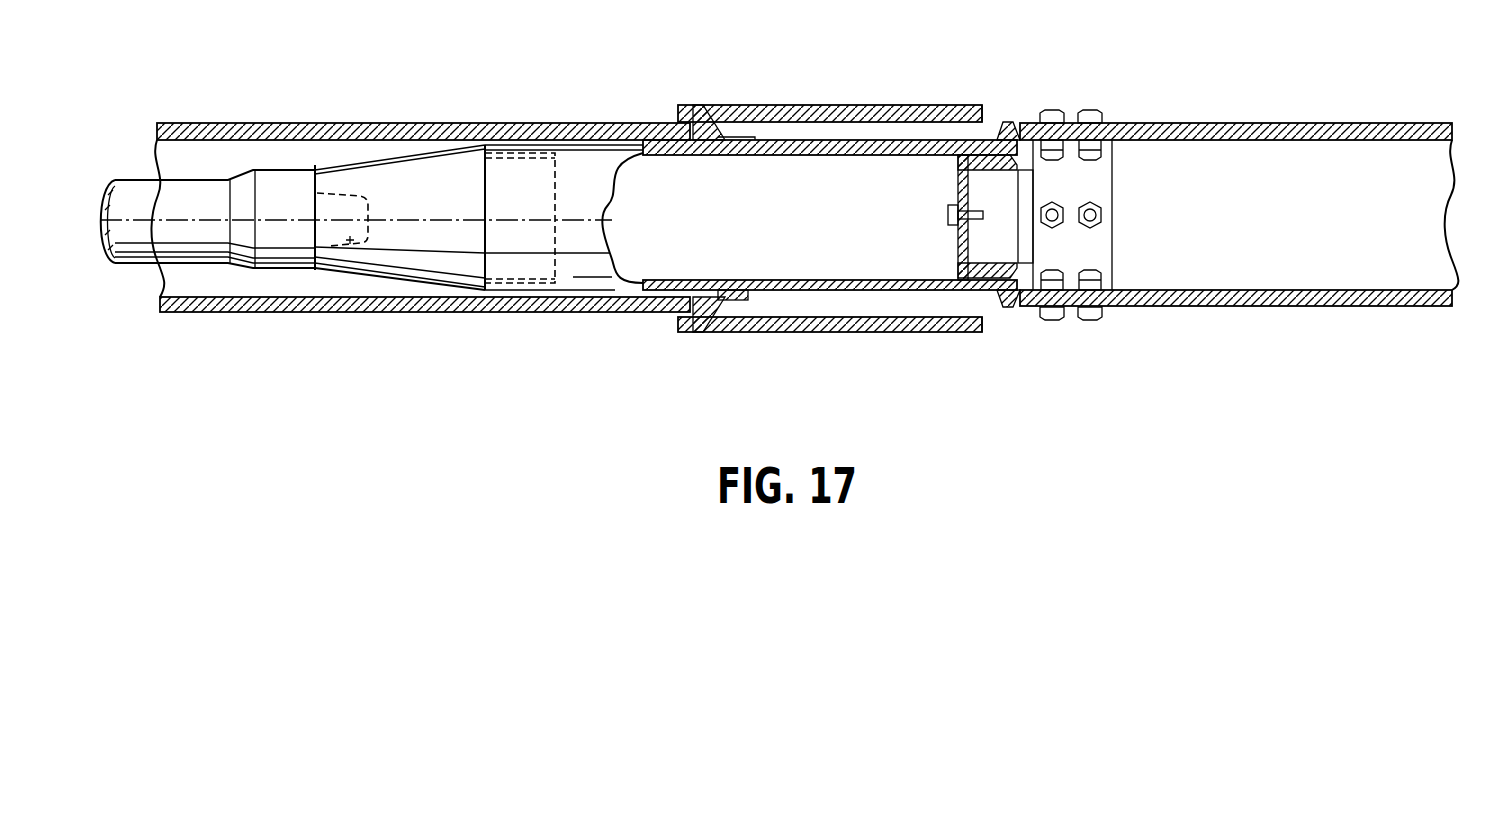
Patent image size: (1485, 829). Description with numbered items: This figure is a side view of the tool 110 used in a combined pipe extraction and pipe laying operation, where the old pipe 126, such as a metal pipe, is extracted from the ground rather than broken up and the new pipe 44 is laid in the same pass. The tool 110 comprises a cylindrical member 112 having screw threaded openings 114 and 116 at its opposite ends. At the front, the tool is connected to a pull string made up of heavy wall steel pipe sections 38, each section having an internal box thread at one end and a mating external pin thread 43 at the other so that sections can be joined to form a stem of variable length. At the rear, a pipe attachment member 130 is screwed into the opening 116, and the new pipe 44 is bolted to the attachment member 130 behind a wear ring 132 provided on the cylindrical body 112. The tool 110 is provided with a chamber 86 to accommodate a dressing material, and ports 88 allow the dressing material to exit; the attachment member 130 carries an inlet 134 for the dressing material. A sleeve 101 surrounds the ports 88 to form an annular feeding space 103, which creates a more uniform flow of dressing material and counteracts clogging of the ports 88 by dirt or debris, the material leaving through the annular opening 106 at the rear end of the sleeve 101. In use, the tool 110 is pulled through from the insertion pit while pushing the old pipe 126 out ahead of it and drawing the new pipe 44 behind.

The tool 110 is at (615, 41).
The old pipe 126 is at (297, 307).
The pipe sections 38 is at (203, 233).
The external thread (pin thread) 43 is at (355, 250).
The screw threaded opening 114 is at (470, 162).
The sleeve 101 is at (765, 105).
The annular feeding space 103 is at (771, 306).
The dresser ports 88 is at (837, 153).
The cylindrical member 112 is at (813, 290).
The chamber 86 is at (877, 258).
The inlet 134 is at (965, 150).
The wear ring 132 is at (1010, 123).
The screw threaded opening 116 is at (1058, 186).
The pipe attachment member 130 is at (1072, 282).
The annular opening 106 is at (996, 320).
The new pipe 44 is at (1238, 295).